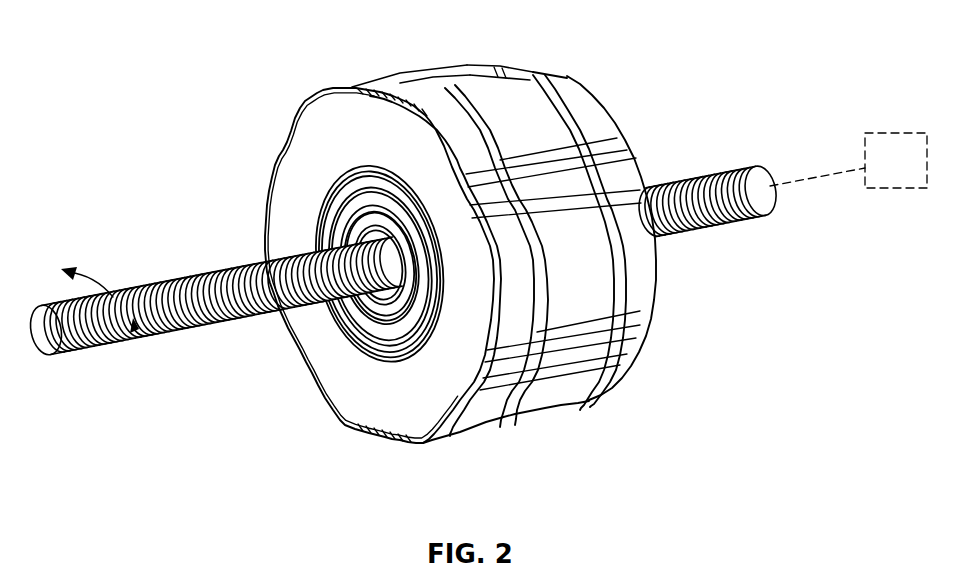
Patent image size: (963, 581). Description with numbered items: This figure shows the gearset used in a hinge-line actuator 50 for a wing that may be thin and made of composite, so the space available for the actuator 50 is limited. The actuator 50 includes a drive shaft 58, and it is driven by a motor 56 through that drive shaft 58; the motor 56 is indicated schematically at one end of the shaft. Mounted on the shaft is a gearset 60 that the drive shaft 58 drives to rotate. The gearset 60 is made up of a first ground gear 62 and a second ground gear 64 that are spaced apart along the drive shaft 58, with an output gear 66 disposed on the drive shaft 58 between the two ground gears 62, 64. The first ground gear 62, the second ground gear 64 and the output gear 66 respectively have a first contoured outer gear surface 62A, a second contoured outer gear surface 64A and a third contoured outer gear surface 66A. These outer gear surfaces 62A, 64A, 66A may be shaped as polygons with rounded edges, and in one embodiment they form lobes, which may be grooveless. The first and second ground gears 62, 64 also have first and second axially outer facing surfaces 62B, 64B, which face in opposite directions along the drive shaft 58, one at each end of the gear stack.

The actuator 50 is at (195, 80).
The motor 56 is at (880, 133).
The drive shaft 58 is at (48, 336).
The gearset 60 is at (602, 130).
The first ground gear 62 is at (457, 423).
The first contoured outer gear surface 62A is at (363, 82).
The first axially outer facing surface 62B is at (380, 410).
The second ground gear 64 is at (602, 385).
The second contoured outer gear surface 64A is at (567, 86).
The second axially outer facing surface 64B is at (657, 288).
The output gear 66 is at (517, 415).
The third contoured outer gear surface 66A is at (443, 68).